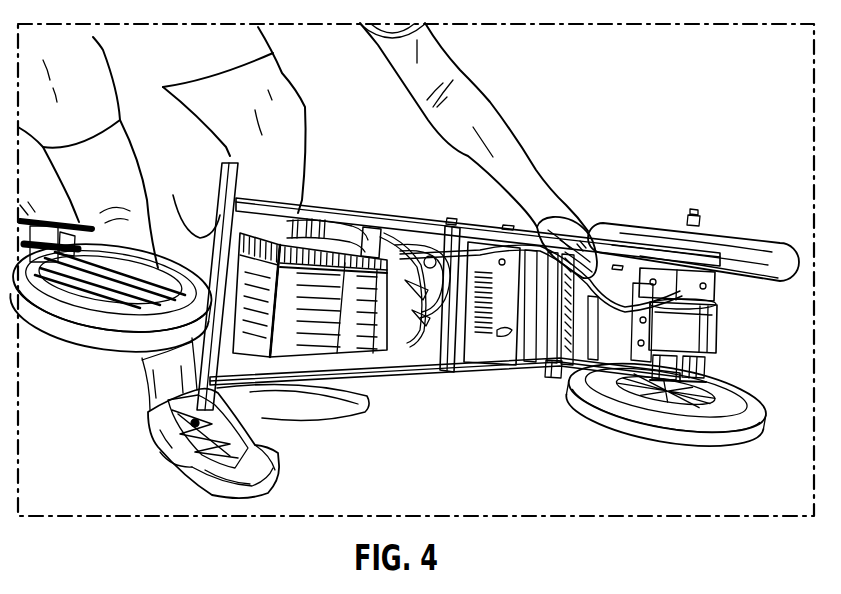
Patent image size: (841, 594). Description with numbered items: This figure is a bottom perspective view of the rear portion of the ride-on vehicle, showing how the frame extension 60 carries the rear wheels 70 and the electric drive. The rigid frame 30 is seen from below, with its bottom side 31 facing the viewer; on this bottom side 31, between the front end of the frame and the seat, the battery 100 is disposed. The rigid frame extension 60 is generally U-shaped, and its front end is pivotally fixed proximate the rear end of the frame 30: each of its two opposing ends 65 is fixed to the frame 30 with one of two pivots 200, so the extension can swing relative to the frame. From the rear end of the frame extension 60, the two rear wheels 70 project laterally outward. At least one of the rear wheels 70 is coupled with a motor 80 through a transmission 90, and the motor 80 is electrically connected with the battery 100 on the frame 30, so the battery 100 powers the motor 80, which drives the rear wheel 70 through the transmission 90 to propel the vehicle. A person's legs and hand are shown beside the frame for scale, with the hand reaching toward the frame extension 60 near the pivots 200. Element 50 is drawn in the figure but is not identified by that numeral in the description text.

The frame 30 is at (222, 243).
The bottom side 31 is at (307, 212).
The front wheel 50 is at (103, 333).
The frame extension 60 is at (553, 378).
The opposing ends 65 is at (530, 232).
The rear wheels 70 is at (733, 250).
The motor 80 is at (707, 333).
The transmission 90 is at (707, 368).
The battery 100 is at (325, 335).
The pivots 200 is at (462, 238).